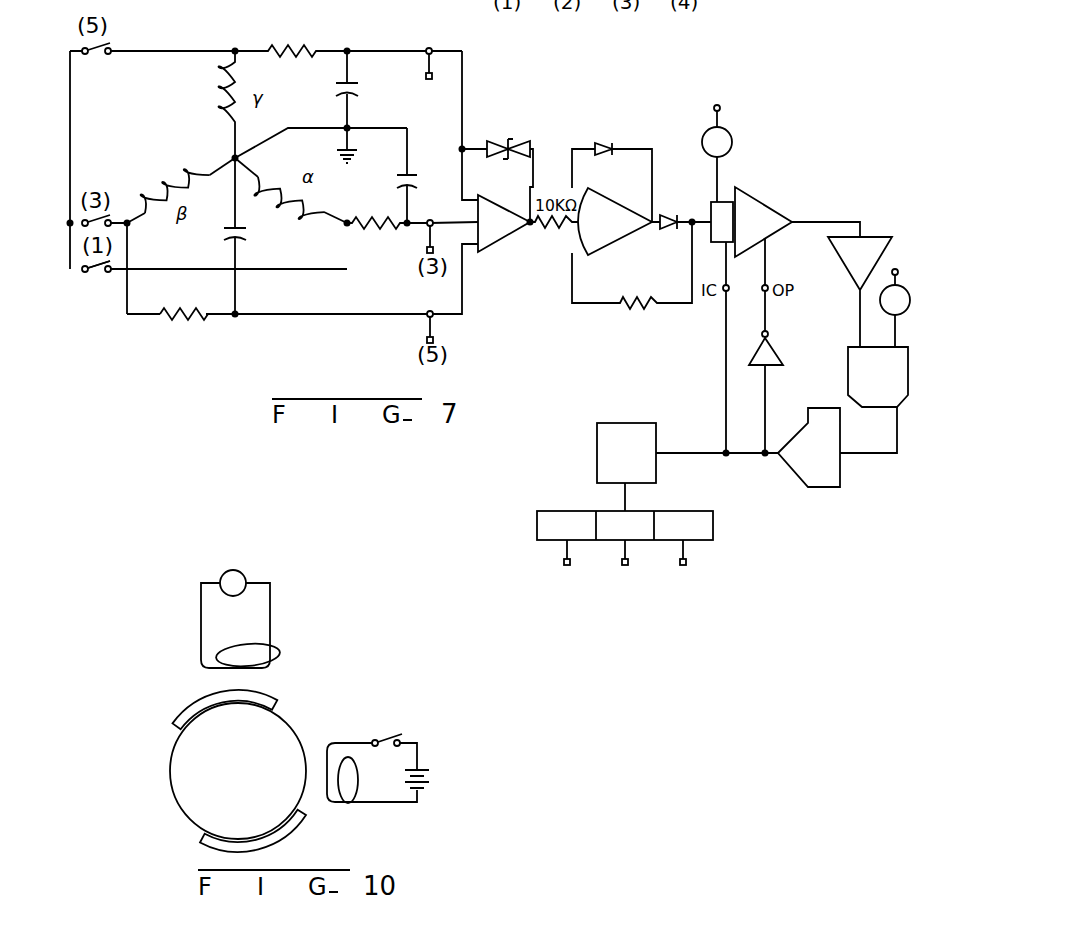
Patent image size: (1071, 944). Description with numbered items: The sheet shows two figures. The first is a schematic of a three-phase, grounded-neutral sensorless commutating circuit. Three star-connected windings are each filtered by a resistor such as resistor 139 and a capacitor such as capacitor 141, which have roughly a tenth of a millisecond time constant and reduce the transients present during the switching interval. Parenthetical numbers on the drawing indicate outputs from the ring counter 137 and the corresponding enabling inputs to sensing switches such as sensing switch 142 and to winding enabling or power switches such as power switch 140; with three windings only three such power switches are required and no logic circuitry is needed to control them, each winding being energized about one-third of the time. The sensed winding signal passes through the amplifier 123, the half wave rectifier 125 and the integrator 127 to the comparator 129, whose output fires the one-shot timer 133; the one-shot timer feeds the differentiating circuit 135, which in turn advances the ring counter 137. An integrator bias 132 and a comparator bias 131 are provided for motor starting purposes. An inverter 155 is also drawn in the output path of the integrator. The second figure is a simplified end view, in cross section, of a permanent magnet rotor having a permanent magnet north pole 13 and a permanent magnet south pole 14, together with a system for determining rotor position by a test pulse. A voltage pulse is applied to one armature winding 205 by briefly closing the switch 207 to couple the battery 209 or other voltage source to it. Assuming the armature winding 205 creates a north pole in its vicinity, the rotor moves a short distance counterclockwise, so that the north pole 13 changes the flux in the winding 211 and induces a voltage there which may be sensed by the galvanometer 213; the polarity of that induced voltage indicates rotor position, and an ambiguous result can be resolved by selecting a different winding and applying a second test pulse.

In FIG. 7, the resistor 139 is at (296, 24).
In FIG. 7, the capacitor 141 is at (334, 89).
In FIG. 7, the sensing switch 142 is at (428, 47).
In FIG. 7, the power switch 140 is at (97, 273).
In FIG. 7, the amplifier 123 is at (512, 236).
In FIG. 7, the half wave rectifier 125 is at (577, 243).
In FIG. 7, the integrator 127 is at (783, 188).
In FIG. 7, the integrator bias 132 is at (728, 129).
In FIG. 7, the comparator bias 131 is at (910, 310).
In FIG. 7, the comparator 129 is at (908, 382).
In FIG. 7, the one-shot timer 133 is at (827, 487).
In FIG. 7, the differentiating circuit 135 is at (597, 442).
In FIG. 7, the ring counter 137 is at (713, 523).
In FIG. 7, the inverter 155 is at (773, 341).
In FIG. 10, the galvanometer 213 is at (247, 575).
In FIG. 10, the winding 211 is at (280, 657).
In FIG. 10, the permanent magnet north pole 13 is at (267, 697).
In FIG. 10, the permanent magnet south pole 14 is at (292, 827).
In FIG. 10, the switch 207 is at (382, 733).
In FIG. 10, the battery 209 is at (432, 777).
In FIG. 10, the armature winding 205 is at (343, 803).